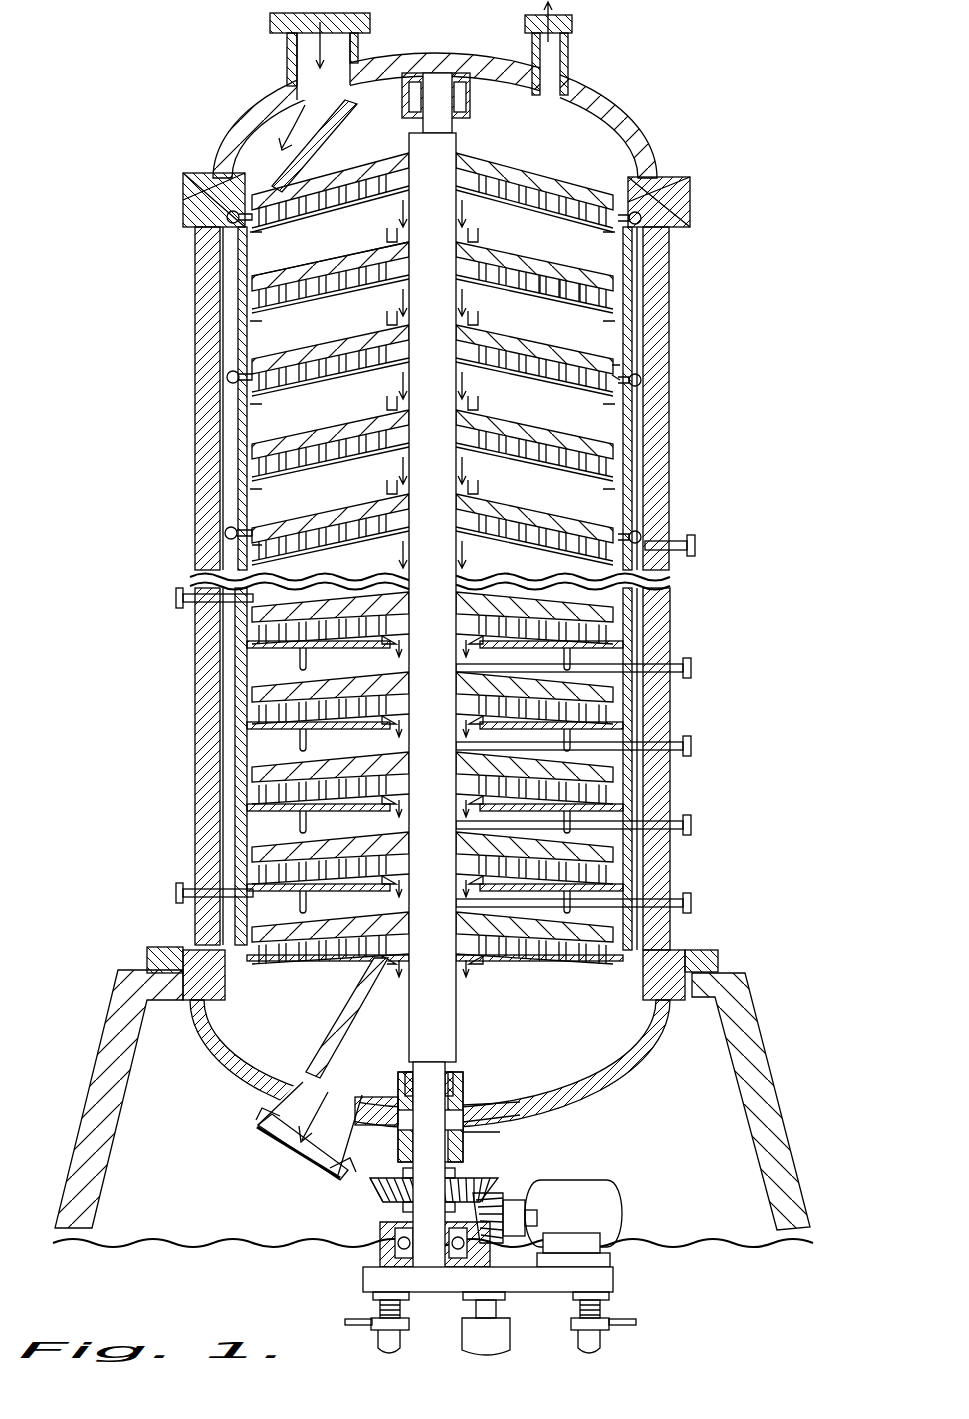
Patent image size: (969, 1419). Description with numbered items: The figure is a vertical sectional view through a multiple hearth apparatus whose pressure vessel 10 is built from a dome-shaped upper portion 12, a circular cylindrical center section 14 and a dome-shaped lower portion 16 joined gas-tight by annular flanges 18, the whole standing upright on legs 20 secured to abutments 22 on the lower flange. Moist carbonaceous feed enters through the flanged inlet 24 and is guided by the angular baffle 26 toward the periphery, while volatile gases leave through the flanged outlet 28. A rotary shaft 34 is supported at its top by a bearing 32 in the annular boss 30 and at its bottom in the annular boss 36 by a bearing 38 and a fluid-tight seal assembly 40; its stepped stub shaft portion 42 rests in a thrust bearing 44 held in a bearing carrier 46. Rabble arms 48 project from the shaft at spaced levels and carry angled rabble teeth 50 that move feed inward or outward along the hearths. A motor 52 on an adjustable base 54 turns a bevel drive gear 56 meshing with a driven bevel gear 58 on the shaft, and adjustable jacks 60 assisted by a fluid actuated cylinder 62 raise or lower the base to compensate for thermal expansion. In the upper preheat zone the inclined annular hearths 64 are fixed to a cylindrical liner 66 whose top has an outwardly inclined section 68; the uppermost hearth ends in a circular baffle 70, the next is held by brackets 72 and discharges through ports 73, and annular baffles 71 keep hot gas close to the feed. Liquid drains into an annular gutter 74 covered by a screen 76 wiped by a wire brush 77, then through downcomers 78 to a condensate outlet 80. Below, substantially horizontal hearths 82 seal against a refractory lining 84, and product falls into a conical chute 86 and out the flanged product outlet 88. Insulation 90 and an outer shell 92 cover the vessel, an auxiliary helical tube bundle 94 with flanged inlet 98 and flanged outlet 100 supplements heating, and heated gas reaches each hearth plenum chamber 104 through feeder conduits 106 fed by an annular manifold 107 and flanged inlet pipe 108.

The pressure vessel 10 is at (660, 128).
The dome-shaped upper portion 12 is at (614, 98).
The circular cylindrical center section 14 is at (652, 316).
The dome-shaped lower portion 16 is at (620, 1062).
The annular flanges 18 is at (183, 200).
The legs 20 is at (98, 1108).
The abutments 22 is at (147, 962).
The flanged inlet 24 is at (282, 52).
The angular baffle 26 is at (312, 160).
The flanged outlet 28 is at (563, 38).
The annular boss 30 is at (410, 104).
The bearing 32 is at (466, 108).
The rotary shaft 34 is at (466, 132).
The annular boss 36 is at (465, 1100).
The bearing 38 is at (462, 1080).
The fluid-tight seal assembly 40 is at (465, 1152).
The stepped stub shaft portion 42 is at (434, 1280).
The thrust bearing 44 is at (398, 1207).
The bearing carrier 46 is at (380, 1240).
The rabble arms 48 is at (502, 262).
The rabble teeth 50 is at (578, 278).
The motor 52 is at (620, 1210).
The adjustable base 54 is at (612, 1278).
The bevel drive gear 56 is at (505, 1195).
The driven bevel gear 58 is at (382, 1192).
The adjustable jacks 60 is at (378, 1342).
The fluid actuated cylinder 62 is at (500, 1342).
The angularly inclined annular hearths 64 is at (272, 232).
The circular cylindrical liner 66 is at (640, 262).
The outwardly inclined section 68 is at (660, 178).
The circular baffle 70 is at (387, 226).
The annular baffles 71 is at (530, 182).
The brackets 72 is at (265, 314).
The ports 73 is at (238, 308).
The annular gutter 74 is at (652, 383).
The screen 76 is at (615, 380).
The scraper element wire brush 77 is at (616, 365).
The downcomers 78 is at (238, 420).
The condensate outlet 80 is at (695, 546).
The annular hearths 82 is at (250, 655).
The refractory lining 84 is at (245, 700).
The conical chute 86 is at (340, 1032).
The flanged product outlet 88 is at (258, 1118).
The insulation 90 is at (660, 604).
The outer shell 92 is at (665, 632).
The auxiliary helical tube bundle 94 is at (250, 820).
The flanged inlet 98 is at (178, 895).
The flanged outlet 100 is at (178, 598).
The plenum chamber 104 is at (490, 968).
The feeder conduit 106 is at (575, 655).
The annular manifold 107 is at (545, 745).
The flanged inlet pipe 108 is at (692, 668).